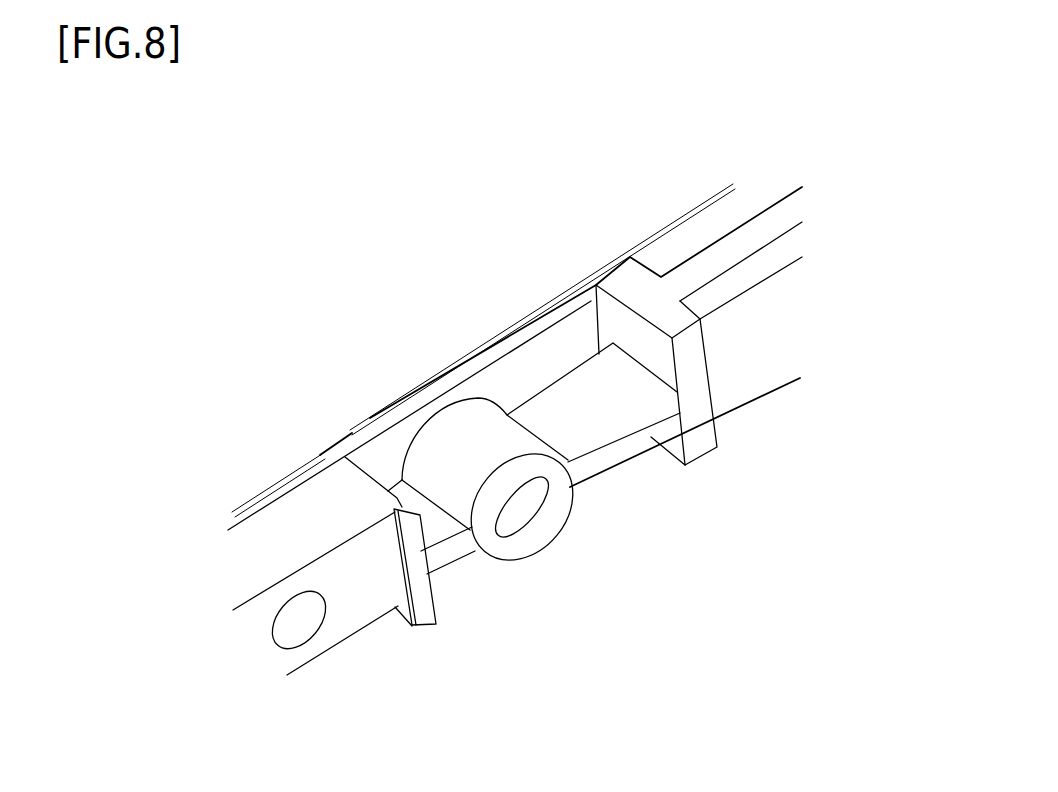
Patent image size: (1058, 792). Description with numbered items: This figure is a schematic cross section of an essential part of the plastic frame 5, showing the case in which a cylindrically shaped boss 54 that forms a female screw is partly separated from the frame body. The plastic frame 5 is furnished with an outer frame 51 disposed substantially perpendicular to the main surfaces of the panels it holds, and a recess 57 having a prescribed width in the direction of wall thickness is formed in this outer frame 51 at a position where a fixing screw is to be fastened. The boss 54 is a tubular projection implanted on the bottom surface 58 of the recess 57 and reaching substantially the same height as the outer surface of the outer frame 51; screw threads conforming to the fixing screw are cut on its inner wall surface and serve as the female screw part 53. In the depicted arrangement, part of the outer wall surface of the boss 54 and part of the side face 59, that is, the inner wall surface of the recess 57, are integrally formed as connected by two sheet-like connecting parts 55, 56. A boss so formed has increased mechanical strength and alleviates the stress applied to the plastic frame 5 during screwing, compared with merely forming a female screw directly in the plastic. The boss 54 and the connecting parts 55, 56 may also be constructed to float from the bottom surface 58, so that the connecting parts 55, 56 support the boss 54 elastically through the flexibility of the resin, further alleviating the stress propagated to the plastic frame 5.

The plastic frame 5 is at (602, 250).
The outer frame 51 is at (293, 507).
The female screw part 53 is at (518, 520).
The boss 54 is at (442, 430).
The connecting part 55 is at (440, 562).
The connecting part 56 is at (607, 450).
The recess 57 is at (612, 484).
The bottom surface 58 is at (555, 355).
The side face 59 is at (640, 345).